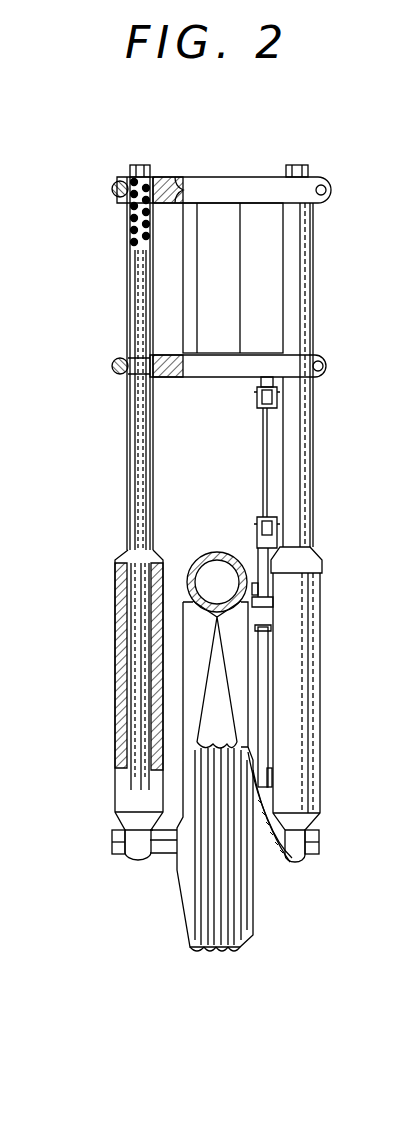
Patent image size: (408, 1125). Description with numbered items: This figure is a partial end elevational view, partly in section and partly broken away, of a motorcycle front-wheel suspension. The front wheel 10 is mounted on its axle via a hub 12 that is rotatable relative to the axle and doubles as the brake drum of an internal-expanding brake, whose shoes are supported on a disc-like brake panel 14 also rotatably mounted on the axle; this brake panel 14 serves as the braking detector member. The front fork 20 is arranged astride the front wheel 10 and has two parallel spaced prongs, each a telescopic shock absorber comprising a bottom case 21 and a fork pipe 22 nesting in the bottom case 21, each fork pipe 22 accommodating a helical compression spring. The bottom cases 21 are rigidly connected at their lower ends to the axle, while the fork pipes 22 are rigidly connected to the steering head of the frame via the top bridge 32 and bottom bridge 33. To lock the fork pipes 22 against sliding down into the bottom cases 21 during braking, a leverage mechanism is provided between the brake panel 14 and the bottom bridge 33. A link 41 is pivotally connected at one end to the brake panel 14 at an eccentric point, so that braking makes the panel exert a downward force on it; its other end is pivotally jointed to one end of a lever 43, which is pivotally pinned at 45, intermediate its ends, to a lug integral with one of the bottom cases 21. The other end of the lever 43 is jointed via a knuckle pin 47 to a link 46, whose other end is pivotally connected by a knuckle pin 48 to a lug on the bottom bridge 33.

The front wheel 10 is at (217, 552).
The hub 12 is at (220, 950).
The brake panel 14 is at (285, 862).
The front fork 20 is at (117, 604).
The bottom case 21 is at (120, 660).
The fork pipe 22 is at (127, 277).
The top bridge 32 is at (197, 178).
The bottom bridge 33 is at (300, 363).
The link 41 is at (268, 683).
The lever 43 is at (273, 548).
The pivot pin 45 is at (275, 600).
The link 46 is at (267, 425).
The knuckle pin 47 is at (255, 530).
The knuckle pin 48 is at (257, 396).